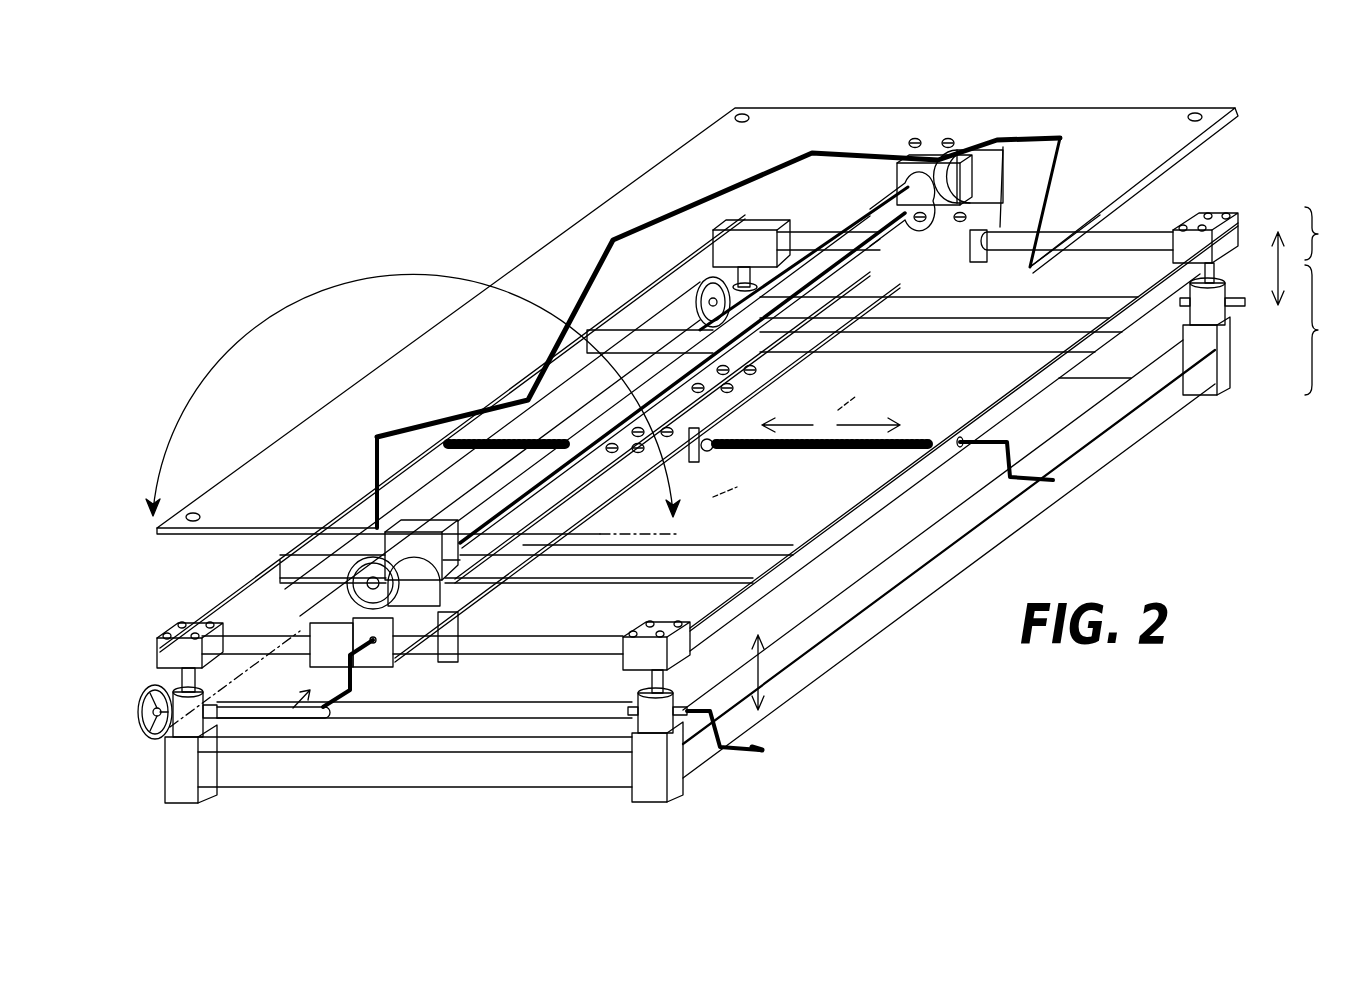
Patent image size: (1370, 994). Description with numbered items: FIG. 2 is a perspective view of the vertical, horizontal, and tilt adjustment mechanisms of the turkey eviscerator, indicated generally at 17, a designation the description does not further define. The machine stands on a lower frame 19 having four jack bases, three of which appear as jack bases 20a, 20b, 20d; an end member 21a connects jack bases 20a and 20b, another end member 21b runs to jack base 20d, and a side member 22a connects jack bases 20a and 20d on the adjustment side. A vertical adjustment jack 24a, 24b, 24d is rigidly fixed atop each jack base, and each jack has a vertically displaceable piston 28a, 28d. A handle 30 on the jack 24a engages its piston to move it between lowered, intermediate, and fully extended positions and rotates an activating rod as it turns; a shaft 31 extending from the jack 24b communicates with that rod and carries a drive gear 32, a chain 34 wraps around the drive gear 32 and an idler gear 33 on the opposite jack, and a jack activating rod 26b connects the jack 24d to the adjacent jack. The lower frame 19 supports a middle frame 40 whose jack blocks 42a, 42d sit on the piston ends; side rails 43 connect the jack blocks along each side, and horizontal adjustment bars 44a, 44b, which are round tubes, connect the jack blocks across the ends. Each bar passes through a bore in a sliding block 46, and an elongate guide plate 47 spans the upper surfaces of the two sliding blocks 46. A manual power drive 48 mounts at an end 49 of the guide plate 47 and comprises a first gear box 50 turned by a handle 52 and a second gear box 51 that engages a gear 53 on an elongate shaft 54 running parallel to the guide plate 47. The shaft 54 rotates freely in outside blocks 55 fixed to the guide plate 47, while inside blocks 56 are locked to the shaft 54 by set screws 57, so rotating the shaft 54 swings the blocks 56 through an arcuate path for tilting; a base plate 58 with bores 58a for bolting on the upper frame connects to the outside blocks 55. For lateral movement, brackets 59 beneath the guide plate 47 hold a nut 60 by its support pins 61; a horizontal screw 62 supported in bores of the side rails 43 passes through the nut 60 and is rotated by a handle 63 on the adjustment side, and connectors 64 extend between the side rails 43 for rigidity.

The saw assembly 17 is at (1032, 50).
The lower frame 19 is at (1326, 330).
The jack base 20a is at (645, 792).
The jack base 20b is at (182, 793).
The jack base 20d is at (1225, 348).
The end member 21a is at (367, 778).
The end member 21b is at (1090, 372).
The side member 22a is at (722, 725).
The vertical adjustment jack 24a is at (647, 718).
The vertical adjustment jack 24b is at (188, 728).
The vertical adjustment jack 24d is at (1212, 313).
The jack activating rod 26b is at (1048, 297).
The piston 28a is at (663, 682).
The piston 28d is at (1214, 277).
The handle 30 is at (763, 750).
The shaft 31 is at (160, 737).
The drive gear 32 is at (157, 697).
The idler gear 33 is at (700, 283).
The chain 34 is at (153, 682).
The middle frame 40 is at (1311, 256).
The jack block 42a is at (647, 623).
The jack block 42d is at (1212, 218).
The side rail 43 is at (228, 603).
The horizontal adjustment bar 44a is at (558, 640).
The second horizontal adjustment bar 44b is at (1137, 230).
The sliding block 46 is at (943, 260).
The guide plate 47 is at (568, 513).
The manual power drive 48 is at (245, 640).
The end 49 is at (367, 670).
The first gear box 50 is at (373, 653).
The second gear box 51 is at (342, 655).
The handle 52 is at (330, 712).
The gear 53 is at (360, 585).
The elongate shaft 54 is at (520, 483).
The outside block 55 is at (997, 173).
The inside block 56 is at (908, 170).
The set screw 57 is at (460, 563).
The base plate 58 is at (1127, 163).
The bore 58a is at (745, 113).
The bracket 59 is at (762, 388).
The nut 60 is at (713, 447).
The support pin 61 is at (693, 453).
The horizontal screw 62 is at (870, 447).
The handle 63 is at (1030, 480).
The connector 64 is at (645, 350).